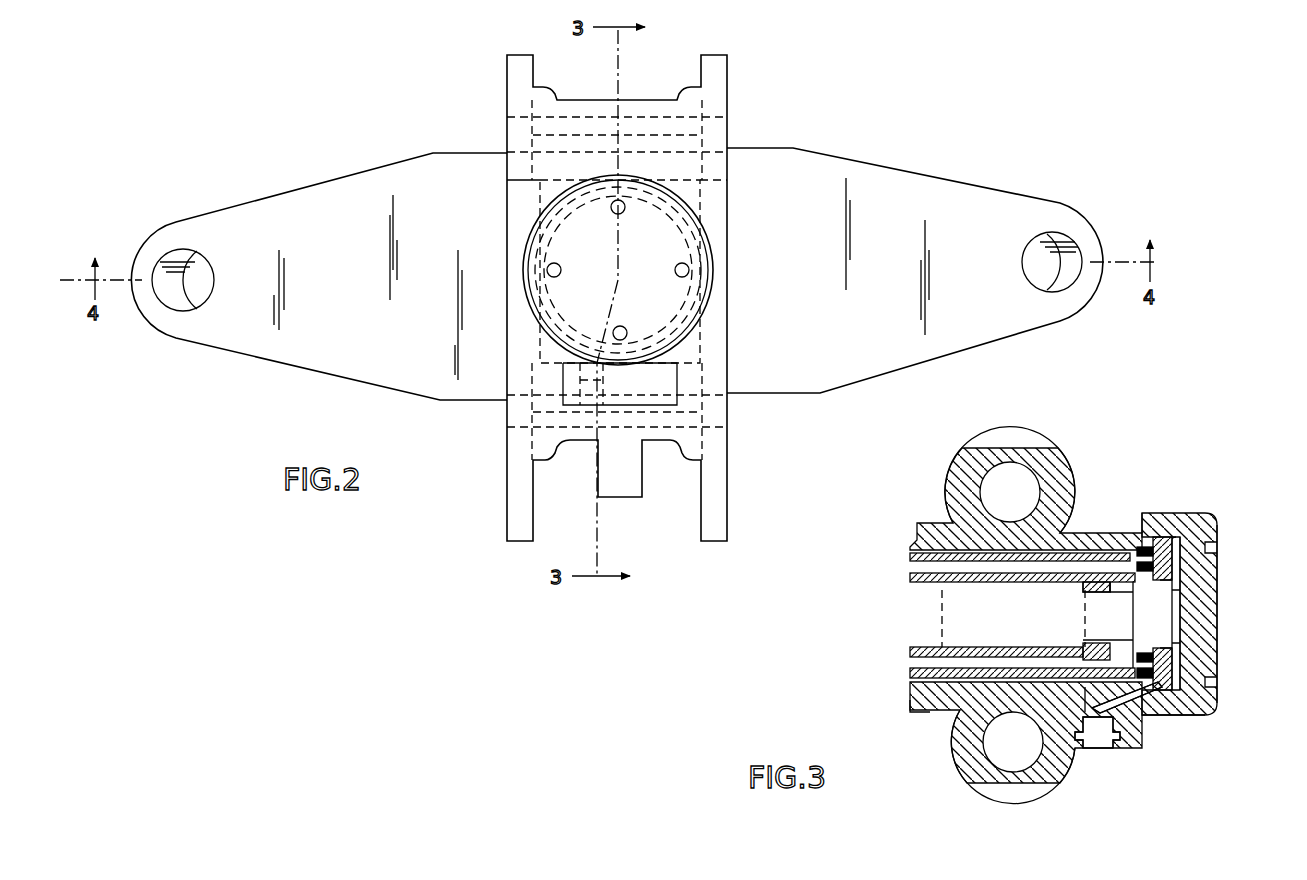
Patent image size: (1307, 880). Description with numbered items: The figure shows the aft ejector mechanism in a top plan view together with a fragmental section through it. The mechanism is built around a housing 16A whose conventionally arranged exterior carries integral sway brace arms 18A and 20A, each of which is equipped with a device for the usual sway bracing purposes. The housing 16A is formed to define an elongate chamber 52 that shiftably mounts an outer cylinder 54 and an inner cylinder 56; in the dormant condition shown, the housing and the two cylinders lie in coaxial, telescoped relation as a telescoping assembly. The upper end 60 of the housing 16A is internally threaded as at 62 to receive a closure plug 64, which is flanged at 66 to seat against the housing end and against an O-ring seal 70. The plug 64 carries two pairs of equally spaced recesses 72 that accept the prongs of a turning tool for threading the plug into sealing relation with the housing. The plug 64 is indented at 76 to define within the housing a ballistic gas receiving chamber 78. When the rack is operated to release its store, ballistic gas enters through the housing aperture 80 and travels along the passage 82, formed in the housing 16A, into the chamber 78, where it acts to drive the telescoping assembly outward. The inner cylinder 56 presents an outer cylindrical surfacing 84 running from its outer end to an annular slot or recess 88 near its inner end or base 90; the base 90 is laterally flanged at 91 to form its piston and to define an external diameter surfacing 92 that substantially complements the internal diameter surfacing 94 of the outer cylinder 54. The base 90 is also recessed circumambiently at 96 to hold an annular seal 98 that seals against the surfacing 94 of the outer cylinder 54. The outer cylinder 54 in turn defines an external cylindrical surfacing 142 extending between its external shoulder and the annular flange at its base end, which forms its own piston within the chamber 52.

In FIG. 2, the housing 16A is at (728, 203).
In FIG. 3, the housing 16A is at (1112, 532).
In FIG. 2, the sway brace arm 18A is at (925, 187).
In FIG. 2, the sway brace arm 20A is at (345, 197).
In FIG. 2, the closure plug 64 is at (655, 252).
In FIG. 3, the closure plug 64 is at (1200, 612).
In FIG. 2, the recesses 72 is at (689, 268).
In FIG. 2, the housing aperture 80 is at (588, 382).
In FIG. 3, the housing aperture 80 is at (1107, 750).
In FIG. 3, the elongate chamber 52 is at (910, 570).
In FIG. 3, the inner cylinder 56 is at (940, 580).
In FIG. 3, the outer cylindrical surfacing 84 is at (993, 573).
In FIG. 3, the inner end or base 90 is at (1133, 606).
In FIG. 3, the annular seal 98 is at (1113, 597).
In FIG. 3, the recess 96 is at (1145, 652).
In FIG. 3, the internal diameter surfacing 94 is at (910, 657).
In FIG. 3, the outer cylinder 54 is at (910, 683).
In FIG. 3, the external cylindrical surfacing 142 is at (920, 712).
In FIG. 3, the annular slot or recess 88 is at (1131, 540).
In FIG. 3, the external diameter surfacing 92 is at (1140, 550).
In FIG. 3, the upper end 60 is at (1160, 525).
In FIG. 3, the lateral flange 91 is at (1162, 533).
In FIG. 3, the flange 66 is at (1217, 528).
In FIG. 3, the internal threads 62 is at (1183, 570).
In FIG. 3, the ballistic gas receiving chamber 78 is at (1178, 590).
In FIG. 3, the indentation 76 is at (1185, 650).
In FIG. 3, the O-ring seal 70 is at (1215, 690).
In FIG. 3, the passage 82 is at (1143, 717).